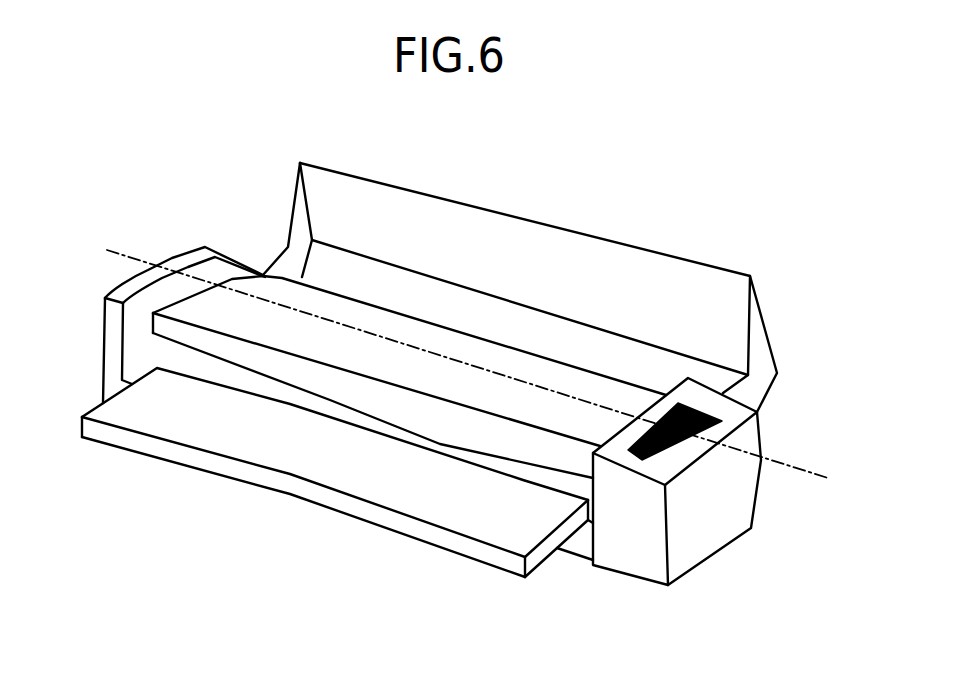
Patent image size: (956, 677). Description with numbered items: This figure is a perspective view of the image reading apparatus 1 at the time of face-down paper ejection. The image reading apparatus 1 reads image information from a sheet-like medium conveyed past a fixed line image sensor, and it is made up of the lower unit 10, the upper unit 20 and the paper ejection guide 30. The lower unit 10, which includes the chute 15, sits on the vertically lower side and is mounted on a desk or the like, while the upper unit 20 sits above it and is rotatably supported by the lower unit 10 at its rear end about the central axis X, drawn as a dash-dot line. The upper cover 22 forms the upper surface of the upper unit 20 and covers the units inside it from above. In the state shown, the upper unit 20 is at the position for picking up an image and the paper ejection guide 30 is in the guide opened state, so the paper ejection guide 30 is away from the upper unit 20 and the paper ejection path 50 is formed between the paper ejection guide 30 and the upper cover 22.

The image reading apparatus 1 is at (82, 162).
The lower unit 10 is at (571, 575).
The chute 15 is at (287, 478).
The upper unit 20 is at (150, 342).
The upper cover 22 is at (207, 311).
The paper ejection guide 30 is at (541, 221).
The paper ejection path 50 is at (484, 308).